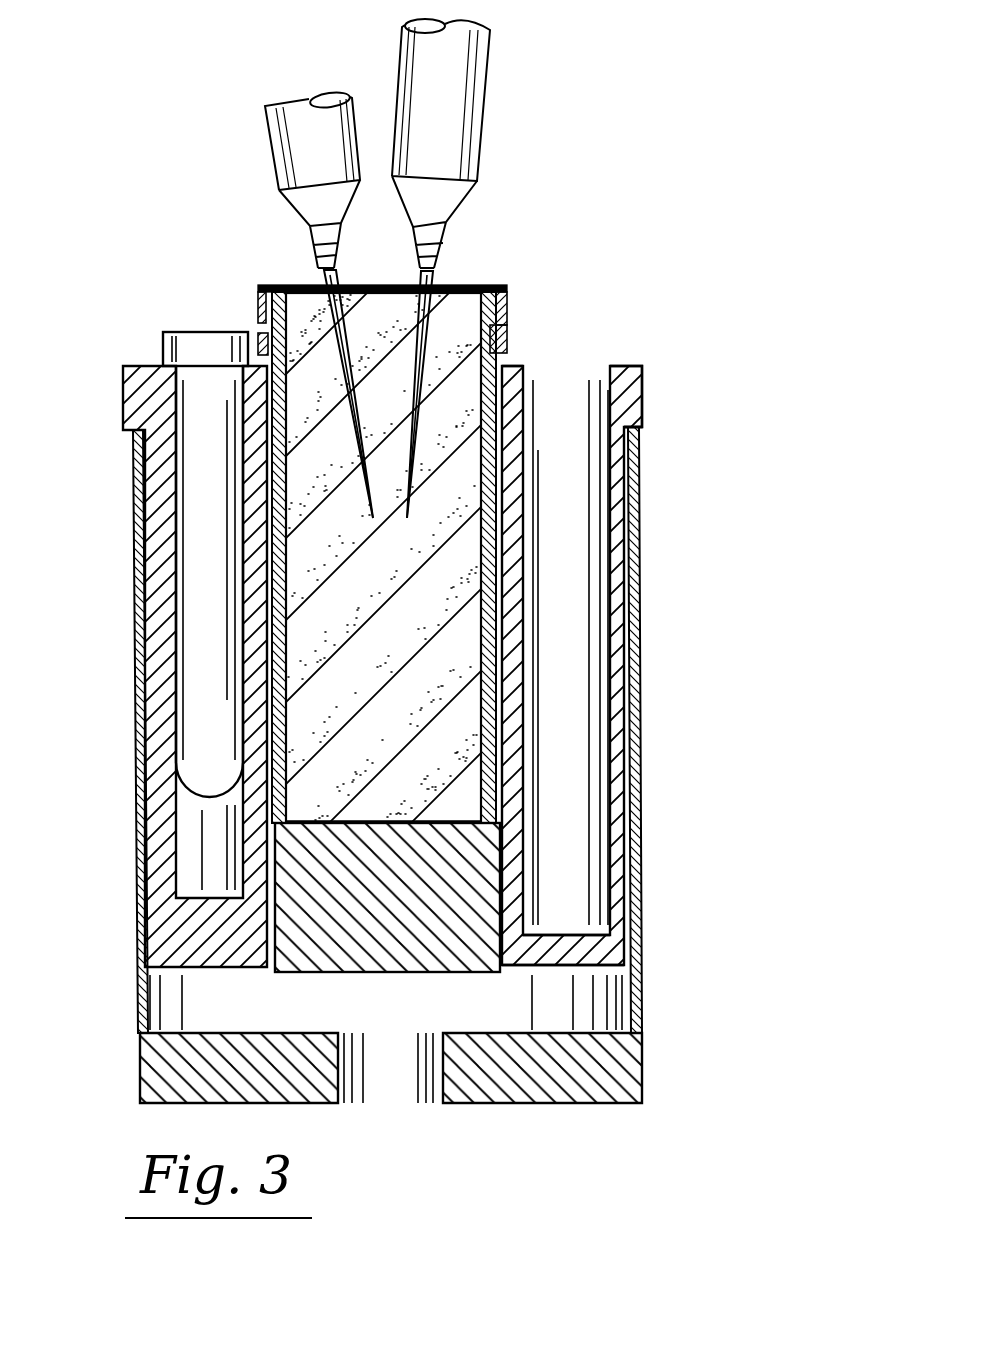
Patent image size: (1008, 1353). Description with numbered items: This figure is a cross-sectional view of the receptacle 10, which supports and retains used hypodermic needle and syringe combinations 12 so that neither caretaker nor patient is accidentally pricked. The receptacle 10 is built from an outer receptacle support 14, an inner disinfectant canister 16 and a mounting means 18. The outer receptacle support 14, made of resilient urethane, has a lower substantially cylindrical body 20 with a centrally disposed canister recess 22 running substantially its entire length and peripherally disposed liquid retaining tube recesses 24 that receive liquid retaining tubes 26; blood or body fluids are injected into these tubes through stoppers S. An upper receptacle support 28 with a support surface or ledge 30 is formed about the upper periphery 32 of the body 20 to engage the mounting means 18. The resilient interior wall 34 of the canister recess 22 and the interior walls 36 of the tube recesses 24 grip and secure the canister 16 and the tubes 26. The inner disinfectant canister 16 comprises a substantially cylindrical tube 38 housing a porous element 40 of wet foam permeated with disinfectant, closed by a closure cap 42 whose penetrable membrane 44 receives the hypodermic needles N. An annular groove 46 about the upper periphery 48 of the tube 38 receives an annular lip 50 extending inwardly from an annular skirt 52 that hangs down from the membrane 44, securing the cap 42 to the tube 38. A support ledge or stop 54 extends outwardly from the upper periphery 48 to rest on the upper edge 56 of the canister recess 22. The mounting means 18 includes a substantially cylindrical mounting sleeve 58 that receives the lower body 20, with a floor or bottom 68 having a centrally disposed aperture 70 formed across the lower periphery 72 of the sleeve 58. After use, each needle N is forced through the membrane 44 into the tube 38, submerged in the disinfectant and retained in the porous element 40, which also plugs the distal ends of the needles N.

The receptacle 10 is at (735, 728).
The hypodermic needle and syringe combination 12 is at (262, 155).
The outer receptacle support 14 is at (722, 552).
The inner disinfectant canister 16 is at (607, 270).
The mounting means 18 is at (693, 1000).
The lower substantially cylindrical body 20 is at (148, 548).
The canister recess 22 is at (268, 930).
The liquid retaining tube recess 24 is at (203, 848).
The liquid retaining tube 26 is at (195, 668).
The upper receptacle support 28 is at (642, 392).
The support surface or ledge 30 is at (642, 427).
The upper periphery of the lower cylindrical body 32 is at (608, 466).
The interior wall of the canister recess 34 is at (487, 740).
The interior wall of the liquid tube recess 36 is at (608, 812).
The substantially cylindrical tube 38 is at (487, 655).
The porous element 40 is at (457, 700).
The closure cap 42 is at (505, 289).
The penetrable membrane 44 is at (453, 282).
The annular groove 46 is at (507, 333).
The upper periphery of the cylindrical tube 48 is at (490, 407).
The annular lip 50 is at (258, 330).
The annular skirt 52 is at (258, 292).
The support ledge or stop 54 is at (500, 357).
The upper edge of the canister recess 56 is at (500, 366).
The substantially cylindrical mounting sleeve 58 is at (642, 940).
The floor or bottom 68 is at (560, 1103).
The centrally disposed aperture 70 is at (398, 1103).
The lower periphery of the mounting sleeve 72 is at (645, 1047).
The stopper S is at (163, 336).
The hypodermic needle N is at (347, 380).